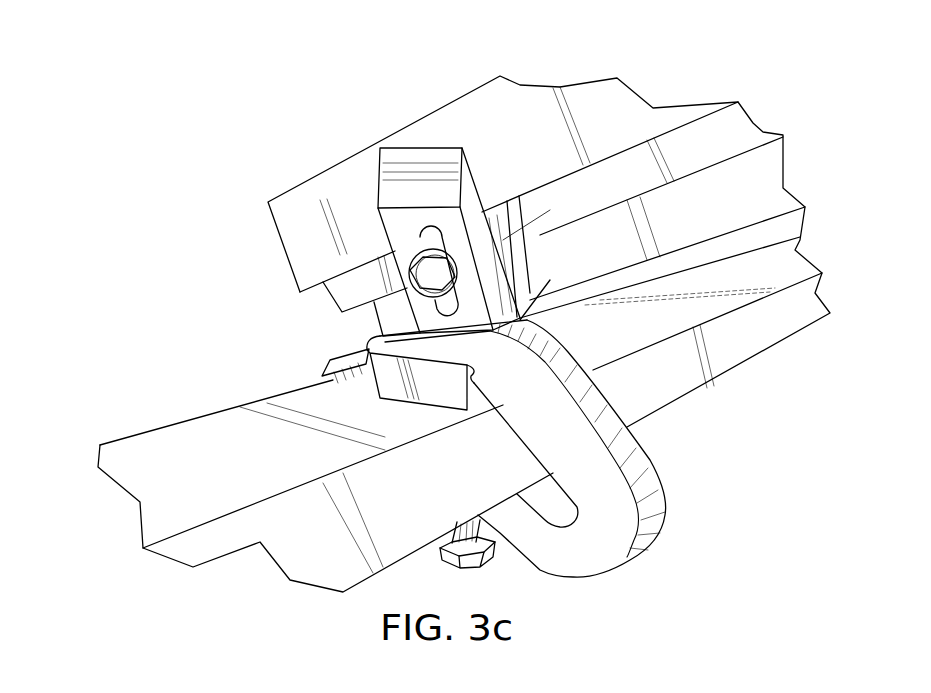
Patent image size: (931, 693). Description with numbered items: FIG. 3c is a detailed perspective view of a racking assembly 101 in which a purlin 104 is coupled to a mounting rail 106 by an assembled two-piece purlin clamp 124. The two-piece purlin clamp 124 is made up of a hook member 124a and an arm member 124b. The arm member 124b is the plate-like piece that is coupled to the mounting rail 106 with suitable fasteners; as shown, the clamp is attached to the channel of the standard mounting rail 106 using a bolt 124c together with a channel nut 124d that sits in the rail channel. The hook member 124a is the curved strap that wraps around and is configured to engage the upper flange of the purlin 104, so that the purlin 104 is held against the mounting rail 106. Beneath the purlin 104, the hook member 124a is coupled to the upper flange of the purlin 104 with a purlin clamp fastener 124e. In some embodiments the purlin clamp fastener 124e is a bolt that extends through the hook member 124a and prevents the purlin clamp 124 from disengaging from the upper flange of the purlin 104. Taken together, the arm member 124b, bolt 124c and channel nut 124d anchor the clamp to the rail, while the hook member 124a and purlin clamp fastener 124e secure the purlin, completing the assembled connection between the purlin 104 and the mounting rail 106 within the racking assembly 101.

The mounting assembly 101 is at (226, 163).
The purlin 104 is at (177, 422).
The mounting rail 106 is at (377, 143).
The two-piece purlin clamp 124 is at (365, 349).
The hook member 124a is at (664, 506).
The arm member 124b is at (387, 233).
The bolt 124c is at (413, 297).
The channel nut 124d is at (522, 224).
The purlin clamp fastener 124e is at (493, 557).